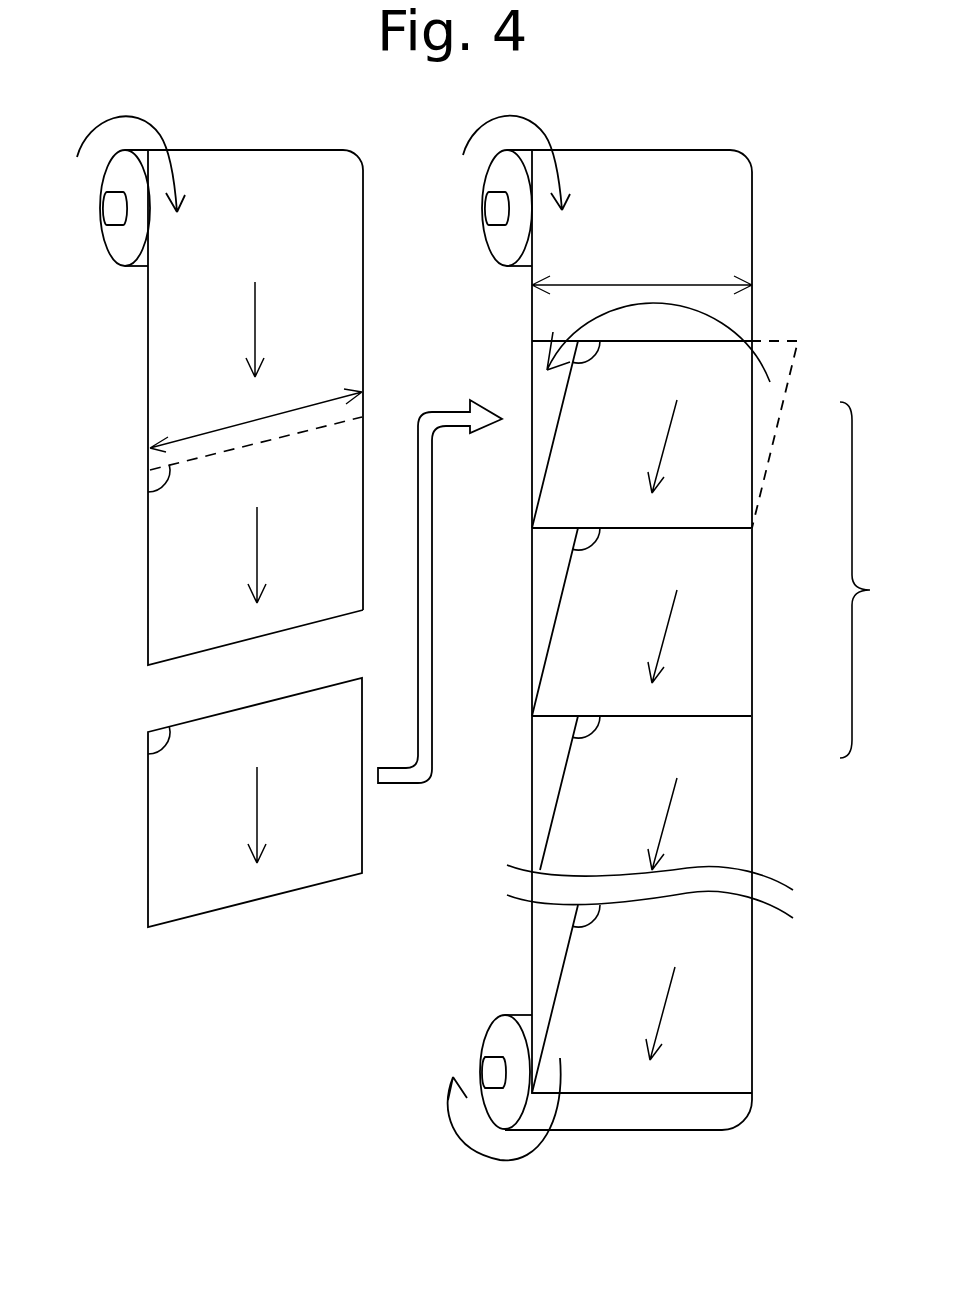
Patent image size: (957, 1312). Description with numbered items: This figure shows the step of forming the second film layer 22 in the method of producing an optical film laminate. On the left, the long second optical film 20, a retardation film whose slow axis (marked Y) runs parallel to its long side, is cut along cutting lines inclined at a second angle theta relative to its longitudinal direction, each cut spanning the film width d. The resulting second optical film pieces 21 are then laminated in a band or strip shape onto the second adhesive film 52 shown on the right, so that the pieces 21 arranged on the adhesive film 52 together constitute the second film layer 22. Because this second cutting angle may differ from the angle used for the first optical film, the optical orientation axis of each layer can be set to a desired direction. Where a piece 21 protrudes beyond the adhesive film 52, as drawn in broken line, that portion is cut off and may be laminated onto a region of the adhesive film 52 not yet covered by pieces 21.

The second optical film 20 is at (228, 187).
The second optical film pieces 21 is at (183, 823).
The second film layer 22 is at (874, 580).
The second adhesive film 52 is at (612, 187).